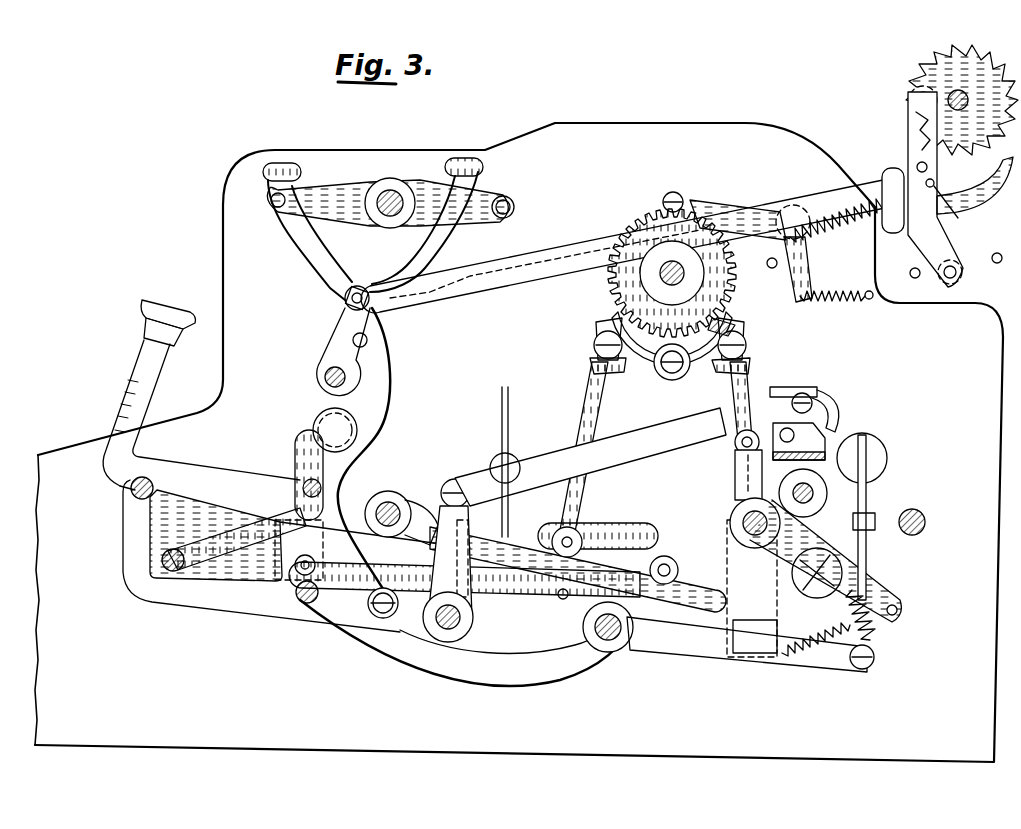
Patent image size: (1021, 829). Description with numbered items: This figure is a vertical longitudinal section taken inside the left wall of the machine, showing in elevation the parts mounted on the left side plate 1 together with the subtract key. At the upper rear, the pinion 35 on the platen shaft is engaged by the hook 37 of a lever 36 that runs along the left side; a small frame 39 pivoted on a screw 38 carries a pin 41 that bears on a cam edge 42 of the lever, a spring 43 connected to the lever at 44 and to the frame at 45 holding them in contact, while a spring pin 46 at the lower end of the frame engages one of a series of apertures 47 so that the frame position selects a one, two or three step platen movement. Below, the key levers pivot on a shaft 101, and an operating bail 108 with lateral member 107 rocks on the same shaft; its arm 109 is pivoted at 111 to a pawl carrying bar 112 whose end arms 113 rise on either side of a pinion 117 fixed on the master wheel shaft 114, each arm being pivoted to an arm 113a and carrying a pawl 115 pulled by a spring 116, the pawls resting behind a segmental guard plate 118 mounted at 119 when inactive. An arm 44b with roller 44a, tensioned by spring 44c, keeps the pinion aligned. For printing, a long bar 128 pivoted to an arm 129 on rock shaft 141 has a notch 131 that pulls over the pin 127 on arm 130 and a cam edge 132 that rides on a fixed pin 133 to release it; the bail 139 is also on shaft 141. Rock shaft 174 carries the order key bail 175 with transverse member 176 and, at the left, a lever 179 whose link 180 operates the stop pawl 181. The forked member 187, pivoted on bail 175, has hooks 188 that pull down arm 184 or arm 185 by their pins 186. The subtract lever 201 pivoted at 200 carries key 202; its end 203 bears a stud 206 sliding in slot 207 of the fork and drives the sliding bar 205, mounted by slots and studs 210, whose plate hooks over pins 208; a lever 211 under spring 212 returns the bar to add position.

The left side plate 1 is at (656, 126).
The pinion 35 is at (945, 62).
The lever 36 is at (540, 262).
The hook 37 is at (1004, 165).
The screw 38 is at (912, 94).
The small frame 39 is at (935, 248).
The pin 41 is at (916, 162).
The cam edge 42 is at (884, 172).
The spring 43 is at (832, 222).
The spring connection point on lever 44 is at (769, 268).
The roller 44a is at (675, 192).
The arm 44b is at (712, 208).
The spring 44c is at (848, 303).
The spring connection point on frame 45 is at (935, 185).
The spring pin 46 is at (950, 286).
The apertures 47 is at (914, 282).
The shaft 101 is at (384, 500).
The lateral member 107 is at (175, 548).
The operating bail 108 is at (200, 578).
The arm 109 is at (538, 593).
The pivotal connection 111 is at (667, 556).
The pawl carrying bar 112 is at (640, 538).
The arm 113 is at (590, 403).
The arm 113a is at (724, 310).
The shaft 114 is at (655, 275).
The pawl 115 is at (594, 332).
The spring 116 is at (590, 360).
The pinion 117 is at (628, 228).
The segmental guard plate 118 is at (636, 345).
The mounting of guard plate 119 is at (672, 380).
The pin 127 is at (735, 446).
The long bar 128 is at (533, 474).
The arm 129 is at (452, 480).
The arm 130 is at (738, 478).
The notch 131 is at (764, 412).
The cam edge 132 is at (812, 428).
The fixed pin 133 is at (868, 448).
The bail 139 is at (162, 612).
The rock shaft 141 is at (442, 632).
The rock shaft 174 is at (612, 652).
The bail 175 is at (510, 690).
The transverse member 176 is at (304, 604).
The lever 179 is at (722, 640).
The link 180 is at (866, 616).
The stop pawl 181 is at (866, 498).
The arm 184 is at (360, 182).
The arm 185 is at (500, 196).
The pins 186 is at (278, 210).
The forked member 187 is at (340, 268).
The hooks 188 is at (283, 165).
The pivot 200 is at (352, 424).
The subtract lever 201 is at (150, 392).
The key 202 is at (166, 312).
The end of lever 203 is at (294, 568).
The sliding bar 205 is at (564, 599).
The stud 206 is at (310, 482).
The slot 207 is at (298, 430).
The pins 208 is at (572, 534).
The slots and studs 210 is at (465, 590).
The lever 211 is at (880, 572).
The spring 212 is at (818, 650).